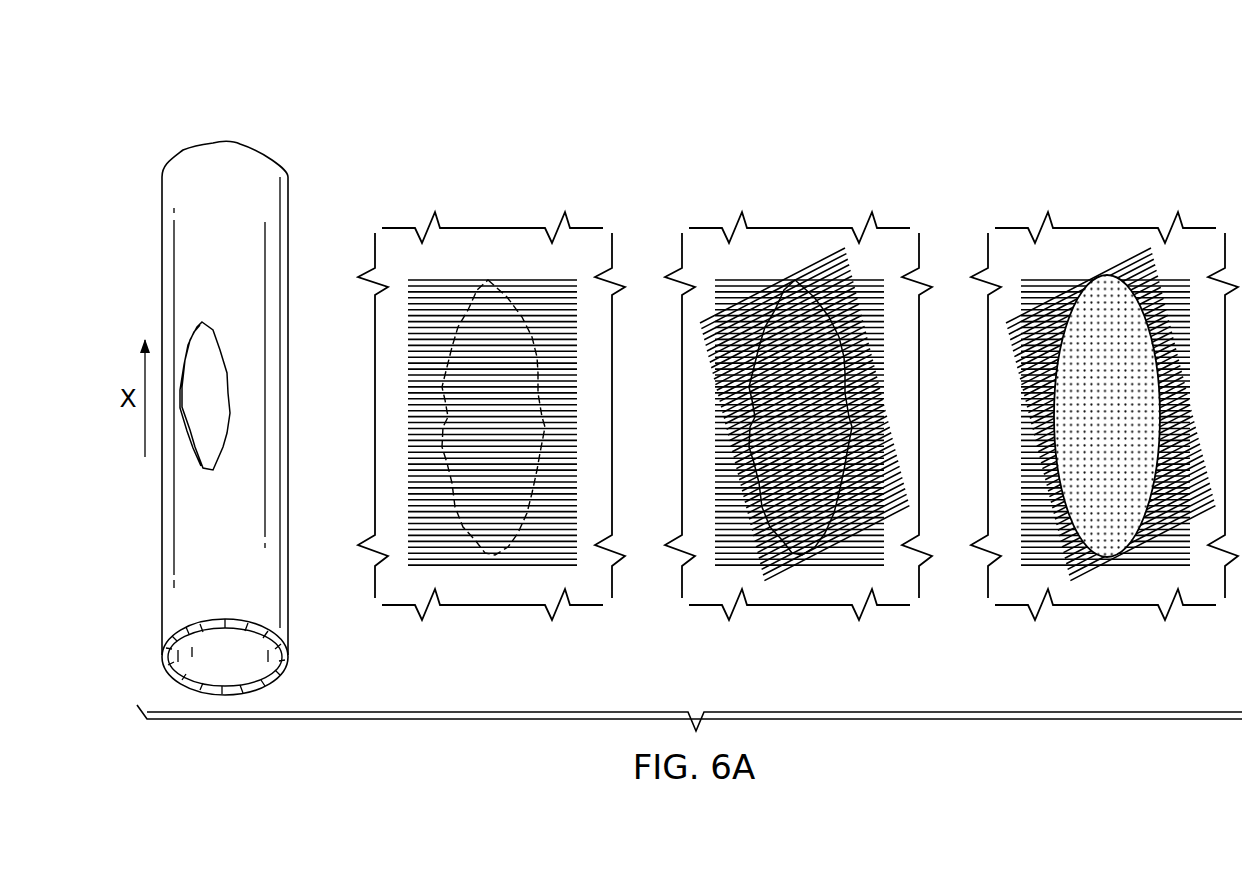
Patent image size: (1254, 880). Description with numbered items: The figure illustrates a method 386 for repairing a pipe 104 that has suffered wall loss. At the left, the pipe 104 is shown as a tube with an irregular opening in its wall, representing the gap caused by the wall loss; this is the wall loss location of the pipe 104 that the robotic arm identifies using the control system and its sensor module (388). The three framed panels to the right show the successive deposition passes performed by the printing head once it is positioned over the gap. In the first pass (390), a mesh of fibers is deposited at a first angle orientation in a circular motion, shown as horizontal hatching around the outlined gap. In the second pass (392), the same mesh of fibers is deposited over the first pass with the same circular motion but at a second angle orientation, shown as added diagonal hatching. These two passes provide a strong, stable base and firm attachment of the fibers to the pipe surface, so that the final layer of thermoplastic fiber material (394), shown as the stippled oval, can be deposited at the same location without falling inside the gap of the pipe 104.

The method for repairing a pipe 386 is at (600, 84).
The wall loss location identification step 388 is at (218, 126).
The first pass deposition step 390 is at (475, 208).
The second pass deposition step 392 is at (821, 208).
The final layer deposition step 394 is at (1128, 208).
The pipe 104 is at (162, 280).